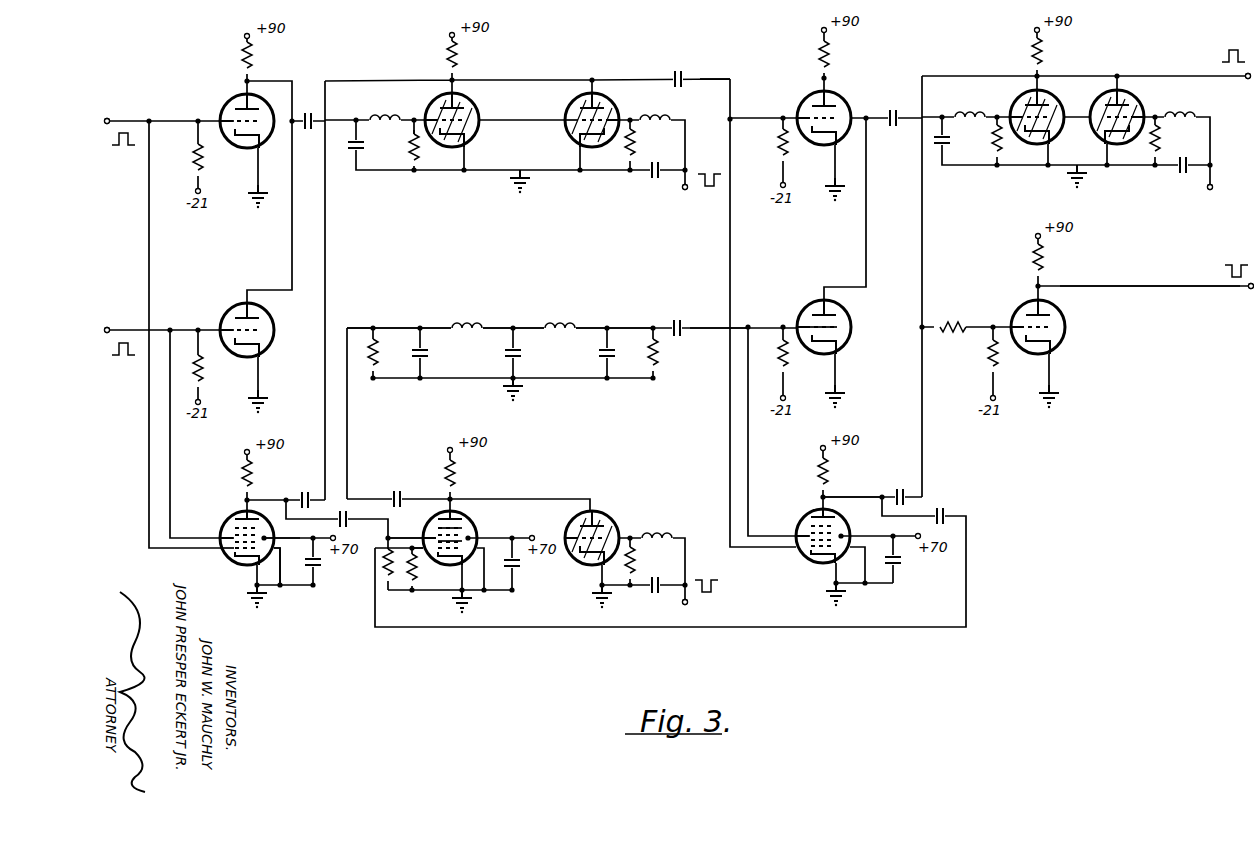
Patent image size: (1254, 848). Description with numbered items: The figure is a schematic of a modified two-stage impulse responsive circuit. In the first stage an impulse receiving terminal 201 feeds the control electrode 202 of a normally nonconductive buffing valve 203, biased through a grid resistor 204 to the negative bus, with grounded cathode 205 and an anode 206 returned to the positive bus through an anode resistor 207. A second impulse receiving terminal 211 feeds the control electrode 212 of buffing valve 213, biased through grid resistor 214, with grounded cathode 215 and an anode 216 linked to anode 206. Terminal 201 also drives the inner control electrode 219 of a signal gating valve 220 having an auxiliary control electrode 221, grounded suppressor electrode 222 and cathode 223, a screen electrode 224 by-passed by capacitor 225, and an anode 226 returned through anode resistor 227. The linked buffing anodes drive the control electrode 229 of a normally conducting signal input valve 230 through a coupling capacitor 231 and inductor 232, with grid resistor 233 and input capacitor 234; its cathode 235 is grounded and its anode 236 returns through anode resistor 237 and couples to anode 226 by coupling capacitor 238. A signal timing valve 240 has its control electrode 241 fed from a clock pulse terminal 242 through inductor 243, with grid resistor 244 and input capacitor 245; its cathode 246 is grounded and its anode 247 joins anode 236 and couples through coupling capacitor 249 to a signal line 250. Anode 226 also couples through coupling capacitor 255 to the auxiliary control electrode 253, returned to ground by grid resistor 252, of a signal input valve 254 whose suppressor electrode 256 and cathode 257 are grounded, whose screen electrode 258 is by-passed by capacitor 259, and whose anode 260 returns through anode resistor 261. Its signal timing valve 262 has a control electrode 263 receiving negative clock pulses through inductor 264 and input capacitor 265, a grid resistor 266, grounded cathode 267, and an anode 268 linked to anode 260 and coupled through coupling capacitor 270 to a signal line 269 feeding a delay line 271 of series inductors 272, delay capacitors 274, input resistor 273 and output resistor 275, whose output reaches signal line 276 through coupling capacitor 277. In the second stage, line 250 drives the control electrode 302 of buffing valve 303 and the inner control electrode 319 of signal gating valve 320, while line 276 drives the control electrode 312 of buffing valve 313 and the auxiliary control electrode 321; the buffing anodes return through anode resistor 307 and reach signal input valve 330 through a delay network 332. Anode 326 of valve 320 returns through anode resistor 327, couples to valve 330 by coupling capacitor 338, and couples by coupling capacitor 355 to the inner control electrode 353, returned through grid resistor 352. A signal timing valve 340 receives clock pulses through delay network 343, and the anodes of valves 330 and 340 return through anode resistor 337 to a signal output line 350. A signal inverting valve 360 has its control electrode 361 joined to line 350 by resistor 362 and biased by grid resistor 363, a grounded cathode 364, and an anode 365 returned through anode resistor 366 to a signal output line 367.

The impulse receiving terminal 201 is at (107, 121).
The control electrode 202 is at (232, 121).
The buffing valve 203 is at (241, 96).
The grid resistor 204 is at (196, 148).
The cathode 205 is at (245, 141).
The anode 206 is at (234, 110).
The plate resistor 207 is at (256, 62).
The impulse receiving terminal 211 is at (108, 327).
The control electrode 212 is at (235, 330).
The buffing valve 213 is at (240, 303).
The grid resistor 214 is at (200, 378).
The cathode 215 is at (266, 340).
The anode 216 is at (265, 320).
The inner control electrode 219 is at (225, 556).
The signal gating valve 220 is at (230, 520).
The auxiliary control electrode 221 is at (218, 540).
The suppressor electrode 222 is at (272, 522).
The cathode 223 is at (250, 560).
The screen electrode 224 is at (282, 545).
The capacitor 225 is at (316, 565).
The anode 226 is at (242, 510).
The anode resistor 227 is at (252, 470).
The control electrode 229 is at (435, 125).
The signal input valve 230 is at (470, 140).
The coupling capacitor 231 is at (306, 112).
The inductor 232 is at (370, 118).
The grid resistor 233 is at (408, 150).
The input capacitor 234 is at (352, 150).
The cathode 235 is at (429, 152).
The anode 236 is at (462, 110).
The anode resistor 237 is at (458, 62).
The coupling capacitor 238 is at (300, 497).
The signal timing valve 240 is at (610, 102).
The control electrode 241 is at (572, 128).
The clock pulse terminal 242 is at (684, 190).
The inductor 243 is at (672, 112).
The grid resistor 244 is at (636, 145).
The input capacitor 245 is at (652, 172).
The cathode 246 is at (597, 147).
The anode 247 is at (580, 108).
The coupling capacitor 249 is at (676, 75).
The signal line 250 is at (725, 78).
The grid resistor 252 is at (388, 540).
The auxiliary control electrode 253 is at (432, 535).
The signal input valve 254 is at (460, 520).
The coupling capacitor 255 is at (348, 518).
The suppressor electrode 256 is at (1248, 288).
The cathode 257 is at (426, 548).
The screen electrode 258 is at (475, 538).
The by-pass capacitor 259 is at (515, 572).
The anode 260 is at (445, 518).
The anode resistor 261 is at (460, 477).
The signal timing valve 262 is at (610, 528).
The control electrode 263 is at (568, 538).
The inductor 264 is at (665, 532).
The input capacitor 265 is at (648, 592).
The grid resistor 266 is at (636, 563).
The cathode 267 is at (598, 568).
The anode 268 is at (600, 515).
The signal line 269 is at (368, 326).
The coupling capacitor 270 is at (394, 495).
The delay line 271 is at (531, 316).
The series inductors 272 is at (478, 333).
The input resistor 273 is at (376, 353).
The capacitor 274 is at (505, 356).
The output resistor 275 is at (660, 355).
The signal line 276 is at (700, 326).
The coupling capacitor 277 is at (677, 322).
The control electrode 302 is at (805, 117).
The buffing valve 303 is at (812, 100).
The anode resistor 307 is at (835, 60).
The control electrode 312 is at (840, 323).
The buffing valve 313 is at (812, 305).
The inner control electrode 319 is at (800, 552).
The signal gating valve 320 is at (815, 512).
The auxiliary control electrode 321 is at (800, 528).
The anode 326 is at (835, 515).
The anode resistor 327 is at (825, 472).
The signal input valve 330 is at (1052, 103).
The delay network 332 is at (986, 103).
The anode resistor 337 is at (1050, 58).
The coupling capacitor 338 is at (898, 493).
The signal timing valve 340 is at (1102, 132).
The delay network 343 is at (1199, 103).
The signal output line 350 is at (1180, 75).
The grid resistor 352 is at (380, 595).
The inner control electrode 353 is at (412, 586).
The coupling capacitor 355 is at (944, 513).
The signal inverting valve 360 is at (1020, 308).
The control electrode 361 is at (1025, 323).
The resistor 362 is at (958, 333).
The grid resistor 363 is at (998, 360).
The cathode 364 is at (1058, 336).
The plate 365 is at (1052, 318).
The anode resistor 366 is at (1050, 262).
The signal output line 367 is at (1130, 284).